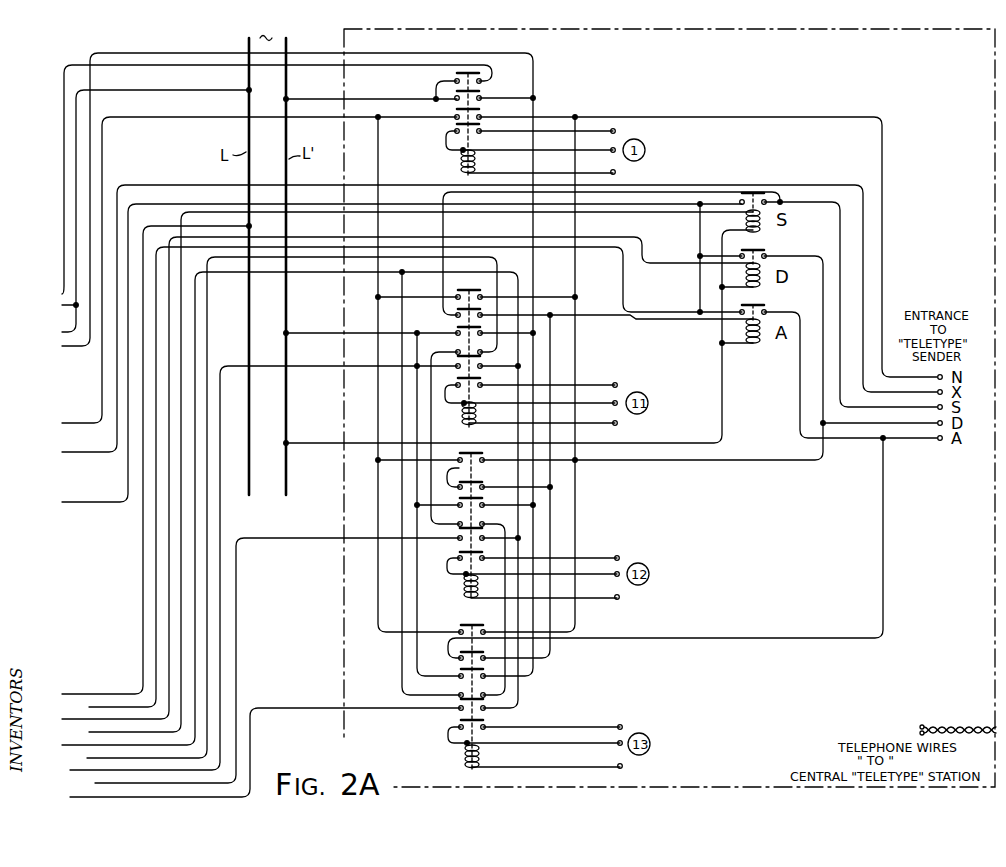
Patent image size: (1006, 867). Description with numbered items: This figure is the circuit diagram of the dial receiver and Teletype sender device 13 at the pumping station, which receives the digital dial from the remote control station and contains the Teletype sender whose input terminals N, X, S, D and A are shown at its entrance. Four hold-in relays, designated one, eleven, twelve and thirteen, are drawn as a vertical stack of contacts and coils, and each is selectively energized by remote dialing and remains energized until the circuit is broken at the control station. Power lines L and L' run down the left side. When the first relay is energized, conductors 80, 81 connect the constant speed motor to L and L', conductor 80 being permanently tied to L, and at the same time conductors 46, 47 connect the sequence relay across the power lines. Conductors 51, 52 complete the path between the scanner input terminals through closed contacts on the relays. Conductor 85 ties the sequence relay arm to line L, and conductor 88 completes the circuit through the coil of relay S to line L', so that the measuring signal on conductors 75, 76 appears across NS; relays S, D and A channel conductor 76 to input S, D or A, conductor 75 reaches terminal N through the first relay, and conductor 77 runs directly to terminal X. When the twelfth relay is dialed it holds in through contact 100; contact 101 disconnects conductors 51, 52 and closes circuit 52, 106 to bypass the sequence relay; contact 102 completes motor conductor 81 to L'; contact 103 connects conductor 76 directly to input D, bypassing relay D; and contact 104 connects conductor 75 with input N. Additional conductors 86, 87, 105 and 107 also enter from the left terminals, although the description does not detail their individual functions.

The dial receiver and Teletype sender device 13 is at (950, 32).
The conductor 46 is at (30, 294).
The conductor 47 is at (30, 305).
The conductor 51 is at (30, 758).
The conductor 52 is at (30, 745).
The conductor 75 is at (30, 423).
The conductor 76 is at (30, 502).
The conductor 77 is at (30, 452).
The motor conductor 80 is at (30, 332).
The motor conductor 81 is at (30, 346).
The conductor 85 is at (30, 694).
The conductor 86 is at (30, 707).
The conductor 87 is at (30, 719).
The conductor 88 is at (30, 732).
The hold-in contact 100 is at (459, 552).
The relay contact 101 is at (483, 527).
The relay contact 102 is at (483, 498).
The relay contact 103 is at (483, 482).
The relay contact 104 is at (483, 453).
The conductor 105 is at (30, 770).
The conductor 106 is at (30, 783).
The conductor 107 is at (30, 797).